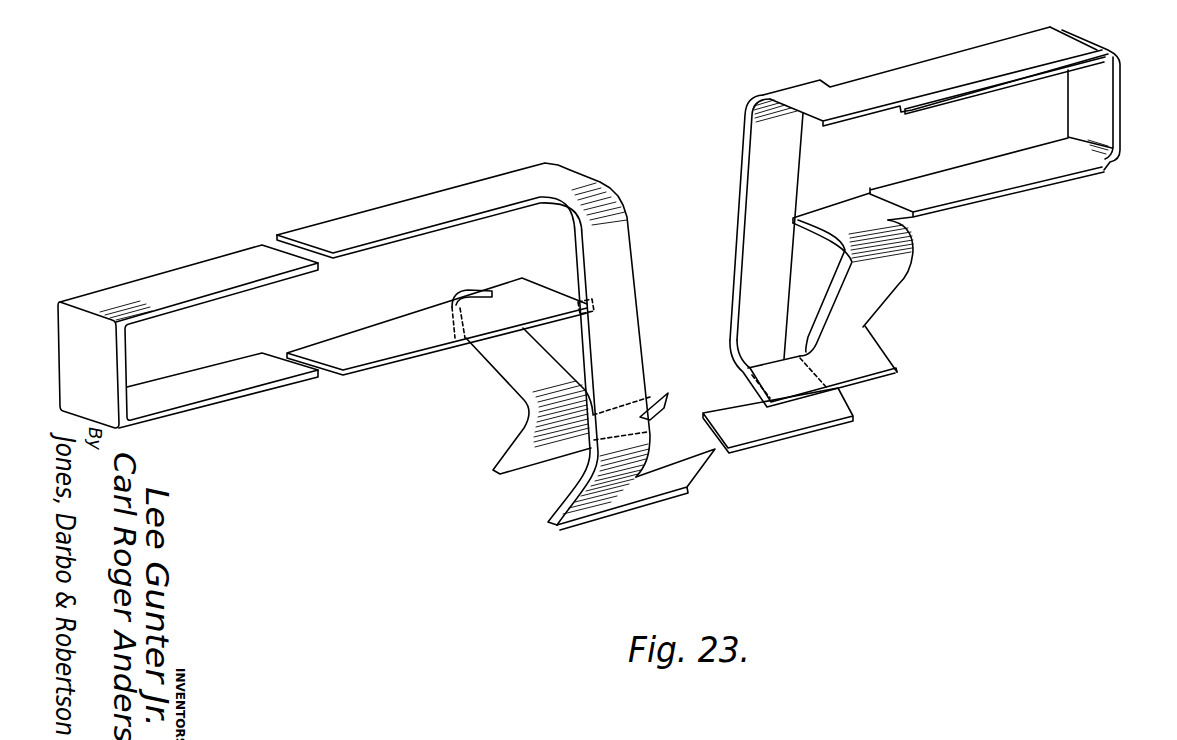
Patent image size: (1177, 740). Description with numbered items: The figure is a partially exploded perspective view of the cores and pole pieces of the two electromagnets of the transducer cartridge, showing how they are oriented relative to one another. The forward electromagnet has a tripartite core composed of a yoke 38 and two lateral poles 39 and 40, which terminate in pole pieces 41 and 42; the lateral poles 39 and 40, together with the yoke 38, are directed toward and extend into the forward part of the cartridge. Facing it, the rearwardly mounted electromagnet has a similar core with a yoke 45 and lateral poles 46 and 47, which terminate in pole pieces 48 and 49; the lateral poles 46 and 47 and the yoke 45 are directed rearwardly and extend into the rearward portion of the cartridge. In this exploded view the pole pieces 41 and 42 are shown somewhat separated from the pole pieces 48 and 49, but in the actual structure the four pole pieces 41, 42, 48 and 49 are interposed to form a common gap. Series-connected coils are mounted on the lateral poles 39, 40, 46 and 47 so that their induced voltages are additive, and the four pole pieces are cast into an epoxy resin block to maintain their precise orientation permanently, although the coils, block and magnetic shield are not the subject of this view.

The yoke 38 is at (1097, 107).
The lateral pole 39 is at (922, 70).
The lateral pole 40 is at (883, 281).
The pole piece 41 is at (783, 425).
The pole piece 42 is at (777, 373).
The yoke 45 is at (127, 355).
The lateral pole 46 is at (438, 196).
The lateral pole 47 is at (425, 350).
The pole piece 48 is at (670, 482).
The pole piece 49 is at (657, 390).